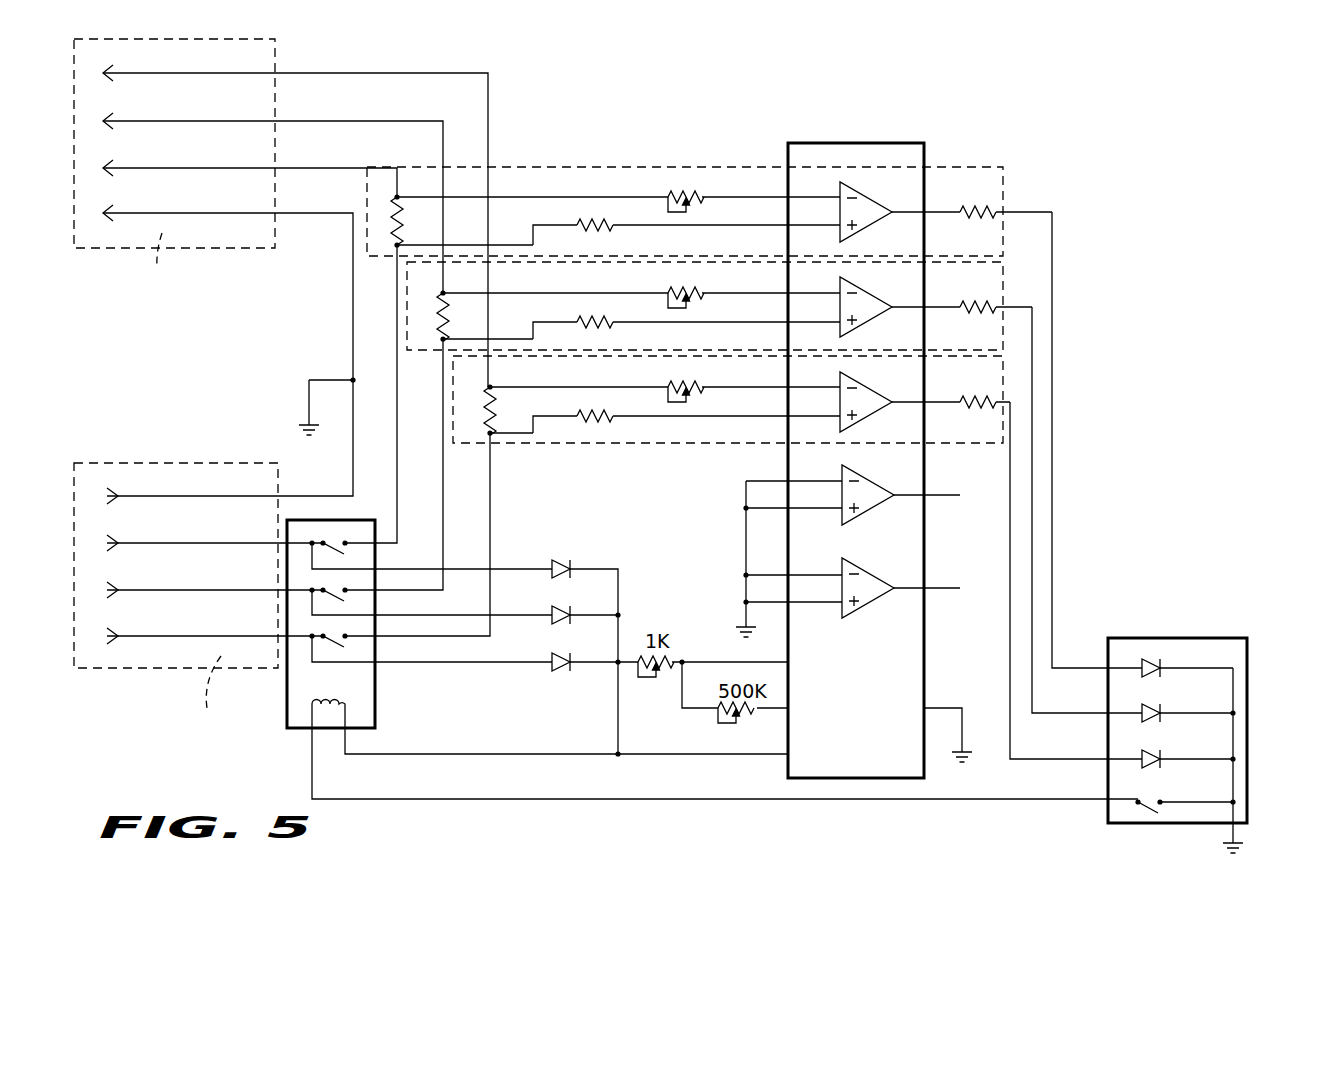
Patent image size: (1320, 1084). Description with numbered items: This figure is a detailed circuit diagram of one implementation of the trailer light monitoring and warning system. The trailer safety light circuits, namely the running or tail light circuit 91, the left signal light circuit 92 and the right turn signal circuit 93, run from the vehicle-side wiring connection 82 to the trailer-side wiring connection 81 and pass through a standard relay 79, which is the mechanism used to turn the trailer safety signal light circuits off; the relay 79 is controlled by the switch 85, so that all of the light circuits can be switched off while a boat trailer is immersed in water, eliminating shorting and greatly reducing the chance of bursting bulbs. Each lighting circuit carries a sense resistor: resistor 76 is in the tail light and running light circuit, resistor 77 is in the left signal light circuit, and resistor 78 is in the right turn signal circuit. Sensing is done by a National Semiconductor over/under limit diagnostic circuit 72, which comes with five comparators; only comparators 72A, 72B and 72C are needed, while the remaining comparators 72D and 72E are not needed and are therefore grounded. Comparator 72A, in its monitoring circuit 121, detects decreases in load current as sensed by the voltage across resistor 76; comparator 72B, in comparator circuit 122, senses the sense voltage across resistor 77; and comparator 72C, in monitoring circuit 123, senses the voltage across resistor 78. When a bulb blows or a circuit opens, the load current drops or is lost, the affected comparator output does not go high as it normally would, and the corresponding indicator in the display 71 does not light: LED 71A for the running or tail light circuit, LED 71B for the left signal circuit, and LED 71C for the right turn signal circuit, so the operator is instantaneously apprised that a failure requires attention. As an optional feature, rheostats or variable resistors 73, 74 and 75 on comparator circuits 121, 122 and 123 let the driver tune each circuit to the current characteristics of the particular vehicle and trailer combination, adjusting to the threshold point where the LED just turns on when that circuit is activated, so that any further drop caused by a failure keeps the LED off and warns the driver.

The remote display 71 is at (1160, 532).
The LED 71A is at (1140, 678).
The LED 71B is at (1140, 718).
The LED 71C is at (1140, 765).
The over/under limit diagnostic circuit 72 is at (861, 444).
The comparator 72A is at (876, 204).
The comparator 72B is at (876, 299).
The comparator 72C is at (876, 394).
The comparator D 72D is at (892, 476).
The comparator E 72E is at (892, 569).
The rheostat 73 is at (668, 193).
The rheostat 74 is at (668, 290).
The rheostat 75 is at (668, 385).
The resistor 76 is at (394, 236).
The resistor 77 is at (440, 334).
The resistor 78 is at (486, 435).
The relay 79 is at (366, 704).
The wiring to trailer standard 4 pin 81 is at (82, 140).
The wiring from auto standard 4 pin 82 is at (243, 480).
The switch 85 is at (1150, 807).
The running or tail light circuit 91 is at (320, 168).
The left signal light circuit 92 is at (400, 121).
The right turn signal circuit 93 is at (467, 73).
The comparator circuit 121 is at (721, 210).
The comparator circuit 122 is at (758, 306).
The comparator circuit 123 is at (781, 399).